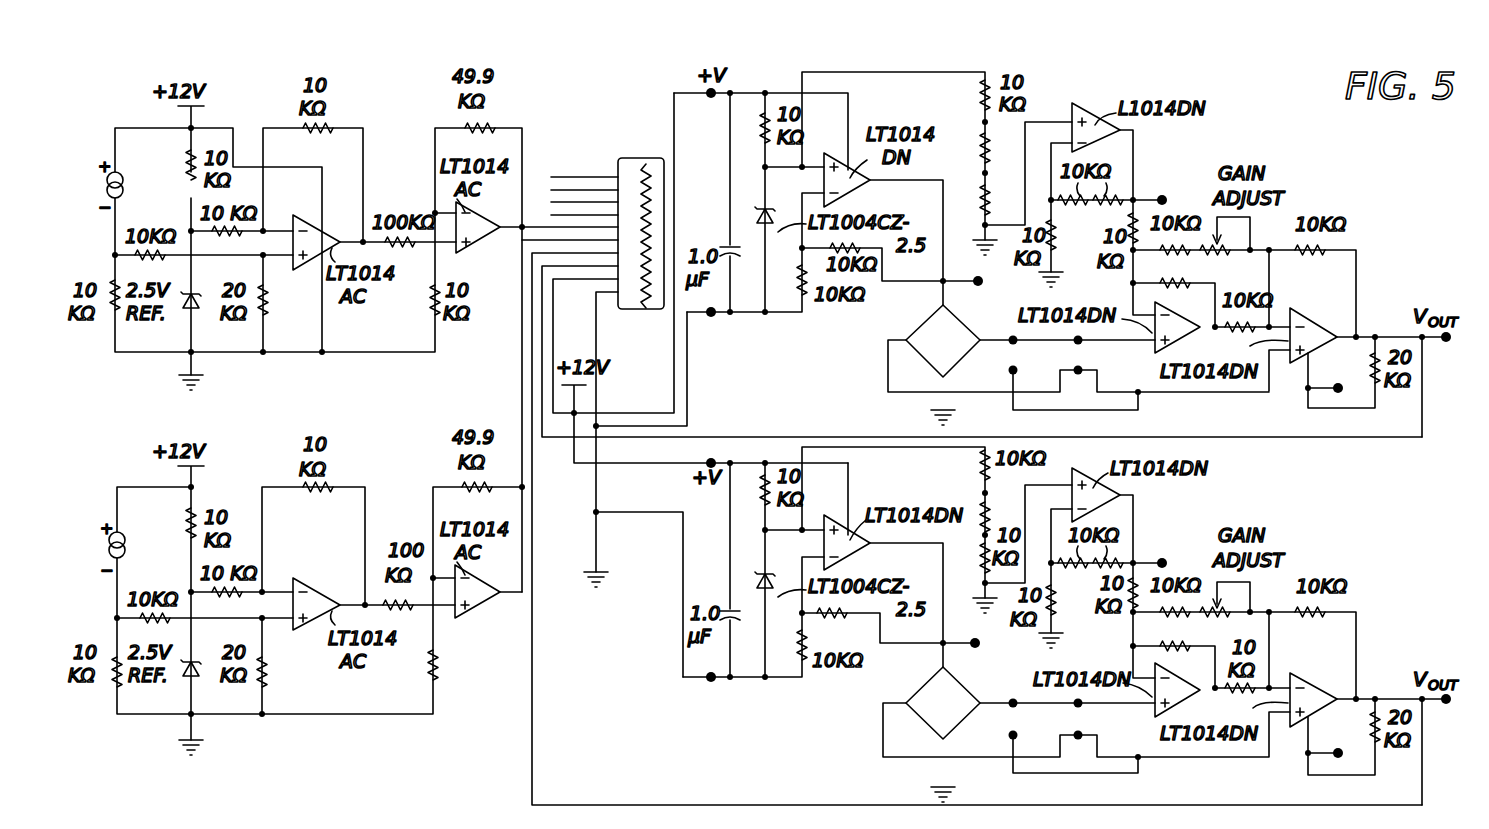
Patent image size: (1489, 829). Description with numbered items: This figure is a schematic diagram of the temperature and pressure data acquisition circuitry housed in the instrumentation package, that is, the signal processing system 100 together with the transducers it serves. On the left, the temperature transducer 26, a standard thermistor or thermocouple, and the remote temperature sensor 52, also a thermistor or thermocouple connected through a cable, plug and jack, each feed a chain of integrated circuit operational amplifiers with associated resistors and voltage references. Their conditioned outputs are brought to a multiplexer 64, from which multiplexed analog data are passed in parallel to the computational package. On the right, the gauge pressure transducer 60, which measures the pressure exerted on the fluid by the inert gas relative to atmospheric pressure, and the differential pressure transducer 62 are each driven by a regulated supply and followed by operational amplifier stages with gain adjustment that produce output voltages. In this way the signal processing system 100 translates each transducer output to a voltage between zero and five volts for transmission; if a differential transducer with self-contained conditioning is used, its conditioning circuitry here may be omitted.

The temperature transducer 26 is at (124, 182).
The remote temperature sensor 52 is at (126, 546).
The multiplexer 64 is at (641, 154).
The signal processing system 100 is at (557, 105).
The gauge pressure transducer 60 is at (965, 322).
The differential pressure transducer 62 is at (965, 688).